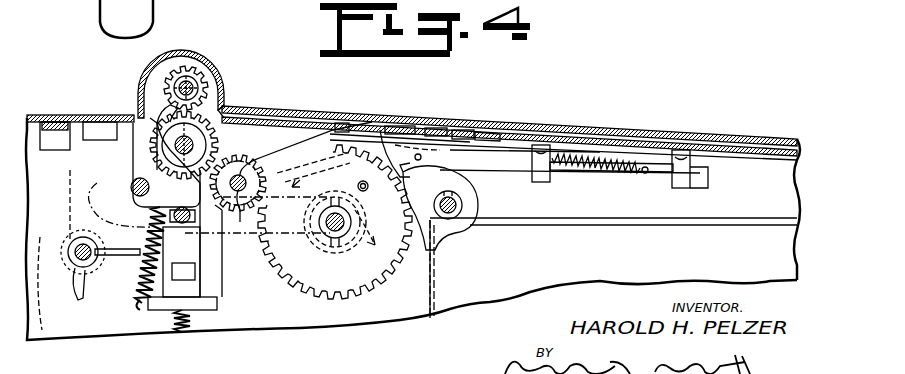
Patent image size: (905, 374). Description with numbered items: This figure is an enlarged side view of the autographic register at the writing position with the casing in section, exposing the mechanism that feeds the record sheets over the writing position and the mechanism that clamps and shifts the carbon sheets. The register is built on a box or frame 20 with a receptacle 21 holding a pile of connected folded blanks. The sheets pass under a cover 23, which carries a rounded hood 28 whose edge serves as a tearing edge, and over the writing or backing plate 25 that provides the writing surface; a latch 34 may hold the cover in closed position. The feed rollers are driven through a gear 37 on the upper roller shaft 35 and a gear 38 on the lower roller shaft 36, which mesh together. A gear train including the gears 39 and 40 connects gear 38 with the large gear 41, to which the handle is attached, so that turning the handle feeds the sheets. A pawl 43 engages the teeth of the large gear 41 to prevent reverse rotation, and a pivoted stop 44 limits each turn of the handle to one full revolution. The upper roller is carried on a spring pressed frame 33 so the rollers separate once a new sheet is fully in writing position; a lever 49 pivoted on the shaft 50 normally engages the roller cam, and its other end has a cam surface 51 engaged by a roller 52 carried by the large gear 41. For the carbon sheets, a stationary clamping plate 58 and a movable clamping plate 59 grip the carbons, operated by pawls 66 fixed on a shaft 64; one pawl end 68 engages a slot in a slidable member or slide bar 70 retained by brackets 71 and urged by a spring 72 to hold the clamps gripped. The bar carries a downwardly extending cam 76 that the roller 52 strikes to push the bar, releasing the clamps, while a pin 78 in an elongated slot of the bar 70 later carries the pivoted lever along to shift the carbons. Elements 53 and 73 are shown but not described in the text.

The box or frame 20 is at (345, 322).
The container or receptacle 21 is at (492, 300).
The cover 23 is at (706, 138).
The writing or backing plate 25 is at (612, 142).
The rounded hood 28 is at (150, 68).
The spring pressed frame 33 is at (190, 268).
The latch 34 is at (128, 153).
The shaft 35 is at (200, 82).
The shaft 36 is at (228, 106).
The gear 37 is at (178, 74).
The gear 38 is at (221, 135).
The gear 39 is at (252, 150).
The gear 40 is at (244, 218).
The large gear 41 is at (368, 290).
The pawl 43 is at (470, 207).
The pivoted stop 44 is at (95, 218).
The lever 49 is at (160, 106).
The shaft 50 is at (213, 233).
The cam surface 51 is at (328, 146).
The roller 52 is at (356, 186).
The slide bar 53 is at (490, 149).
The stationary clamping plate 58 is at (492, 126).
The movable clamping plate 59 is at (358, 118).
The shaft 64 is at (462, 122).
The pawl 66 is at (440, 120).
The pawl end 68 is at (445, 170).
The slidable member or slide bar 70 is at (568, 176).
The brackets 71 is at (536, 176).
The spring 72 is at (612, 175).
The latch lever 73 is at (398, 120).
The cam 76 is at (365, 238).
The pin 78 is at (418, 162).